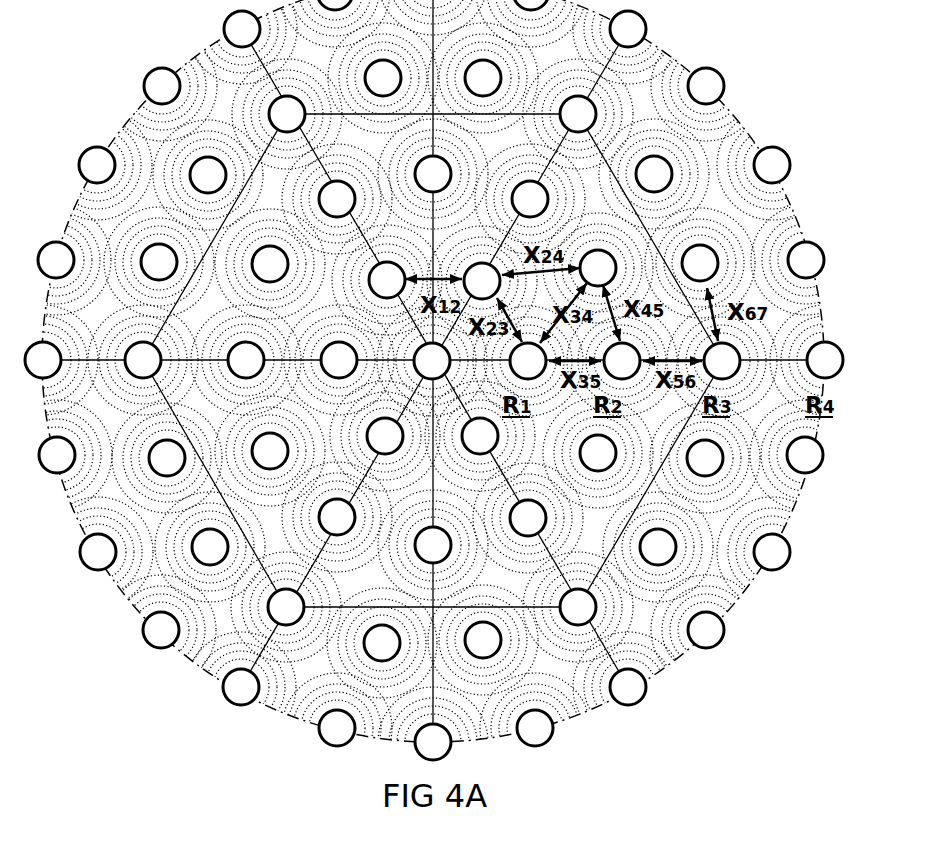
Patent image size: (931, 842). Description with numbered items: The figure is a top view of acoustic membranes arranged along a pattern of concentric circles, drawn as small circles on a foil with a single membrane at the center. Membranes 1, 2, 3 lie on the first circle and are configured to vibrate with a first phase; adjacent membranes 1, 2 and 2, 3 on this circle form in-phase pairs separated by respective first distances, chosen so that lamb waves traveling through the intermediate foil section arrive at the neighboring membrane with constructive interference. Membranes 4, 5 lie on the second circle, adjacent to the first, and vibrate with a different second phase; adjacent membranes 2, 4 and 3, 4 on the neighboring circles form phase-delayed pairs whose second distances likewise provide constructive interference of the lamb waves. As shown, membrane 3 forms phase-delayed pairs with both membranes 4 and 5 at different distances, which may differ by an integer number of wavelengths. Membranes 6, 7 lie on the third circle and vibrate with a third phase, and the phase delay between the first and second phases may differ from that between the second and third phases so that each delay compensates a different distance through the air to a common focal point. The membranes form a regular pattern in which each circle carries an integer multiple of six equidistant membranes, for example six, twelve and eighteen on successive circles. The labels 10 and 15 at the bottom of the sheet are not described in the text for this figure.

The membrane 1 is at (387, 280).
The membrane 2 is at (482, 281).
The membrane 3 is at (528, 361).
The membrane 4 is at (598, 268).
The membrane 5 is at (622, 361).
The membrane 6 is at (722, 361).
The membrane 7 is at (700, 263).
The lighting device 10 is at (666, 833).
The light source array 15 is at (219, 833).